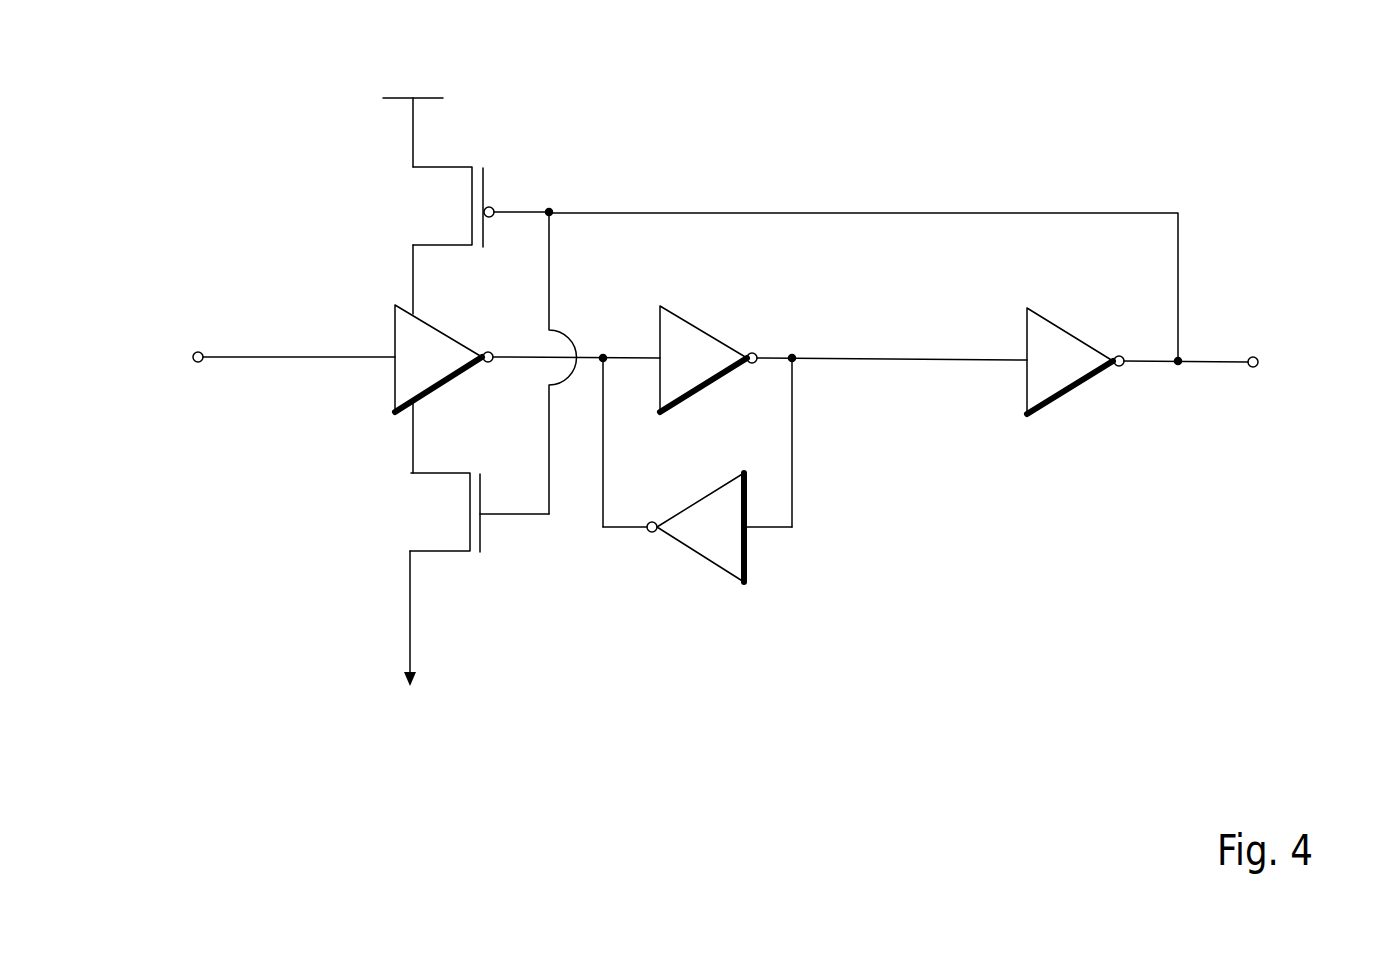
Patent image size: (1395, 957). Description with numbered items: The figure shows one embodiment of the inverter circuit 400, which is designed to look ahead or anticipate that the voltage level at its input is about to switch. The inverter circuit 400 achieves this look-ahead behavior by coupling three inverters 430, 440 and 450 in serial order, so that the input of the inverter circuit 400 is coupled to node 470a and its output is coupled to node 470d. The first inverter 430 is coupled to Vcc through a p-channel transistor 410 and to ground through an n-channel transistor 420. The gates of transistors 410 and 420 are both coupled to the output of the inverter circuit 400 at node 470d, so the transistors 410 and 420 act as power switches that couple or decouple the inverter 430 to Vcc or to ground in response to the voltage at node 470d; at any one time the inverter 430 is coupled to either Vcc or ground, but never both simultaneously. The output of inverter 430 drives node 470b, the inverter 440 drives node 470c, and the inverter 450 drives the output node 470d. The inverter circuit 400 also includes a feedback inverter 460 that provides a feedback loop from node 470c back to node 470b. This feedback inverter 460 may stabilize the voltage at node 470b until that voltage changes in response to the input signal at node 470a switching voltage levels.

The inverter circuit 400 is at (1316, 90).
The p-channel transistor 410 is at (470, 207).
The n-channel transistor 420 is at (468, 512).
The inverter 430 is at (450, 369).
The inverter 440 is at (717, 369).
The inverter 450 is at (1084, 373).
The feedback inverter 460 is at (733, 539).
The node 470a is at (299, 377).
The node 470b is at (572, 362).
The node 470c is at (892, 378).
The node 470d is at (898, 307).